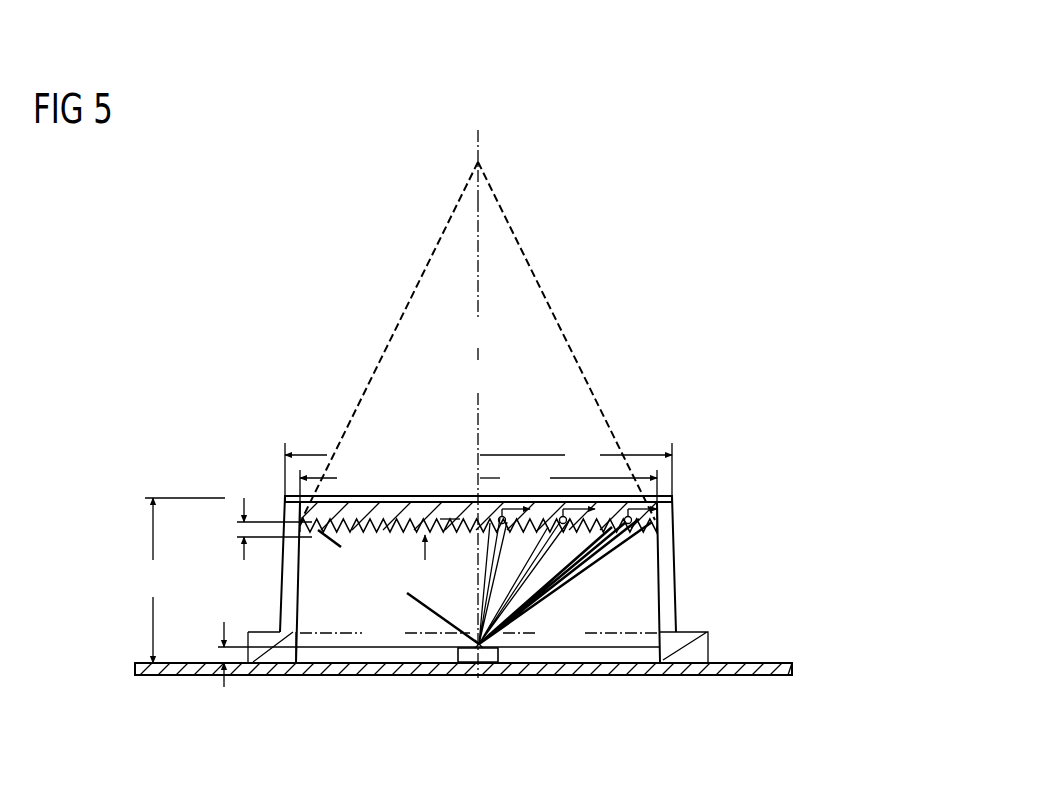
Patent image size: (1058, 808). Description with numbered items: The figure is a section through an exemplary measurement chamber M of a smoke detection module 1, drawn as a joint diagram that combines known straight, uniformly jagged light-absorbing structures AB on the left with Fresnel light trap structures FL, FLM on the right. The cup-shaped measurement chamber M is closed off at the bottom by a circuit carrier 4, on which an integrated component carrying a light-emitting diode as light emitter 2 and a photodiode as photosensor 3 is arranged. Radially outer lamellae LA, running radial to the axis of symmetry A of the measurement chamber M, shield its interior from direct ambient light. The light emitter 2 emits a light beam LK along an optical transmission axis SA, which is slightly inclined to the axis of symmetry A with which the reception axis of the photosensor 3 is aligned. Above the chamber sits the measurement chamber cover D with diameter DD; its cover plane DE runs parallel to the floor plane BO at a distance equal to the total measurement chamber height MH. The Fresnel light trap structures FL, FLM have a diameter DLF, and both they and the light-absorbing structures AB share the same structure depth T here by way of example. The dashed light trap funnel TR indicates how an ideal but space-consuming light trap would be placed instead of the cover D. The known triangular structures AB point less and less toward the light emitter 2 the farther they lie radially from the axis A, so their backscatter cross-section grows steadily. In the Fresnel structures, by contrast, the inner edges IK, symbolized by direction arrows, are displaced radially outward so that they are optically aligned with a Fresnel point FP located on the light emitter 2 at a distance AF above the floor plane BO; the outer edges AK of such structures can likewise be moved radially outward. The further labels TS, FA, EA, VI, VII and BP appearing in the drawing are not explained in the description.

The smoke detection module 1 is at (760, 465).
The light emitter 2 is at (518, 640).
The photosensor 3 is at (497, 657).
The circuit carrier 4 is at (762, 663).
The virtual apex point TS is at (478, 162).
The light trap funnel TR is at (532, 268).
The axis of symmetry A is at (477, 276).
The focal axis FA is at (477, 276).
The optical transmission axis SA is at (478, 513).
The emission axis EA is at (478, 513).
The measurement chamber cover D is at (360, 497).
The measurement chamber cover plane DE is at (395, 497).
The inner edges IK is at (418, 522).
The light-absorbing structures AB is at (450, 518).
The diameter of the measurement chamber cover DD is at (478, 466).
The diameter of the Fresnel light trap structures DLF is at (478, 480).
The measurement chamber M is at (673, 497).
The structure depth T is at (263, 529).
The measurement chamber height MH is at (180, 580).
The outer edges AK is at (350, 537).
The view direction VI is at (428, 563).
The view direction VII is at (428, 563).
The floor plane BO is at (330, 658).
The light beam LK is at (423, 608).
The Fresnel light trap structures FL is at (565, 581).
The Fresnel light trap structures with undercuts FLM is at (608, 548).
The lamellae LA is at (676, 573).
The distance of the Fresnel point from the floor plane AF is at (220, 657).
The Fresnel point FP is at (496, 623).
The reference point BP is at (477, 660).